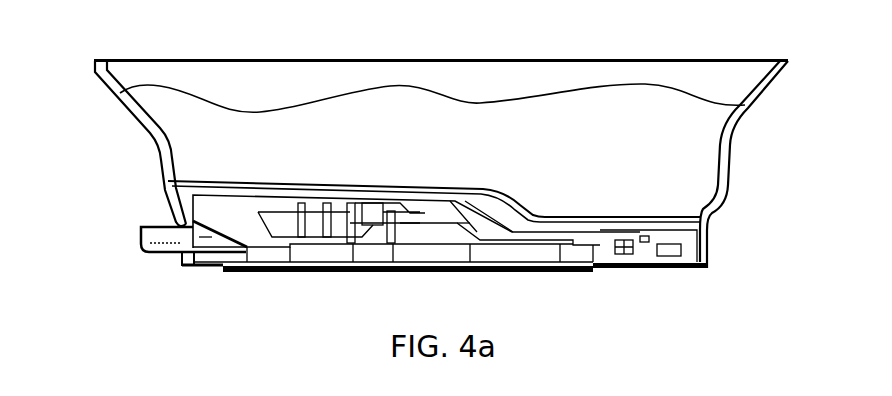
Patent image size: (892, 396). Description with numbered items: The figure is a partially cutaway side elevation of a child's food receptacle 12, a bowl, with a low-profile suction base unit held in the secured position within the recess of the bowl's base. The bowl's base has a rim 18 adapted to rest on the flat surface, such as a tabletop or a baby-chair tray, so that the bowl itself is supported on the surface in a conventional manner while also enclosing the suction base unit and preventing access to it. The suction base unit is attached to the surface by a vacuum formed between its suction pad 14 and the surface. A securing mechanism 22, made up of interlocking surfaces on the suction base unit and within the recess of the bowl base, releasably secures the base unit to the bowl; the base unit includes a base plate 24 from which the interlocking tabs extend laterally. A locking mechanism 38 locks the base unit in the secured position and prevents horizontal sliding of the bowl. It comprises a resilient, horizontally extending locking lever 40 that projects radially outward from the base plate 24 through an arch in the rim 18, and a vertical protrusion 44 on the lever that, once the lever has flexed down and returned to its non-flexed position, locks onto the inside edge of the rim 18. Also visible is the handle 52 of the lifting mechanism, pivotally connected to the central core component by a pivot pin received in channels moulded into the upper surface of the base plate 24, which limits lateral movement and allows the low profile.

The food receptacle 12 is at (210, 60).
The suction pad 14 is at (490, 272).
The rim 18 is at (703, 249).
The securing mechanism 22 is at (212, 212).
The base plate 24 is at (268, 253).
The locking mechanism 38 is at (160, 268).
The locking lever 40 is at (140, 236).
The vertical protrusion 44 is at (210, 240).
The handle 52 is at (280, 212).